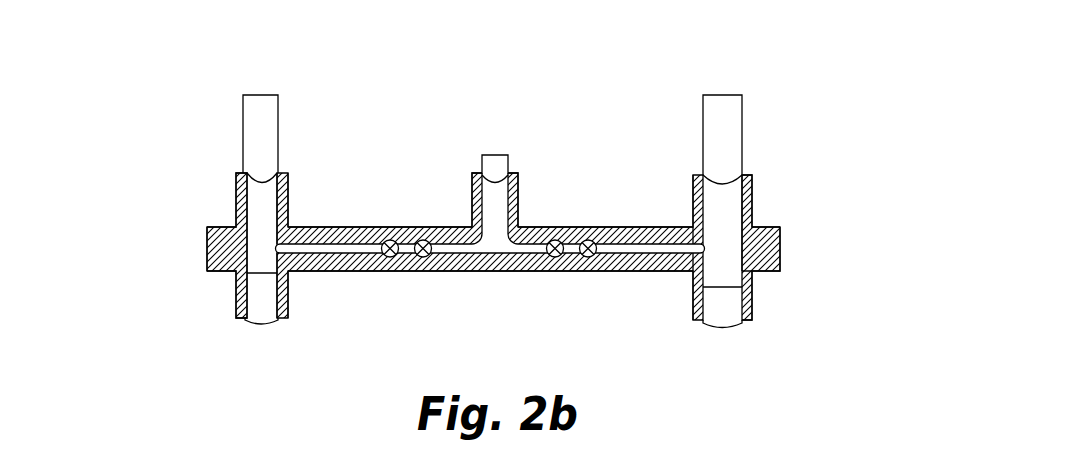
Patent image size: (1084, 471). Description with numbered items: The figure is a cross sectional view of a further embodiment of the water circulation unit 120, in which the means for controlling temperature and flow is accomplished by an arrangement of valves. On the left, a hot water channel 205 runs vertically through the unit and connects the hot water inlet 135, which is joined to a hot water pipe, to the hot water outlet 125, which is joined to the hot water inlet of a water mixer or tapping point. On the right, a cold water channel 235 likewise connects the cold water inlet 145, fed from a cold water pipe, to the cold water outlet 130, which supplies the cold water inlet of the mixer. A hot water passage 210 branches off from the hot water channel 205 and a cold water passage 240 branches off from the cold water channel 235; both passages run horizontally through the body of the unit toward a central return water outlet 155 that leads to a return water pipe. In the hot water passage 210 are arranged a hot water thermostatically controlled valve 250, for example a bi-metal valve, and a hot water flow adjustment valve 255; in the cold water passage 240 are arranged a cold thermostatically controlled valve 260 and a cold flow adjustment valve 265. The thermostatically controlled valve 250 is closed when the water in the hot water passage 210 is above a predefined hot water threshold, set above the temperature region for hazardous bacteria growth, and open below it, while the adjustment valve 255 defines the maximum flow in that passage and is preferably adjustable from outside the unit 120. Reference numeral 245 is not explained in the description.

The water circulation unit 120 is at (170, 108).
The hot water outlet 125 is at (236, 307).
The cold water outlet 130 is at (752, 308).
The hot water inlet 135 is at (236, 200).
The cold water inlet 145 is at (752, 190).
The return water outlet 155 is at (472, 210).
The hot water channel 205 is at (265, 169).
The cold water channel 235 is at (723, 170).
The hot water passage 210 is at (313, 273).
The cold water passage 240 is at (692, 272).
The channel junction 245 is at (520, 227).
The hot water thermostatically controlled valve 250 is at (397, 273).
The hot water flow adjustment valve 255 is at (423, 273).
The cold thermostatically controlled valve 260 is at (590, 273).
The cold flow adjustment valve 265 is at (563, 273).